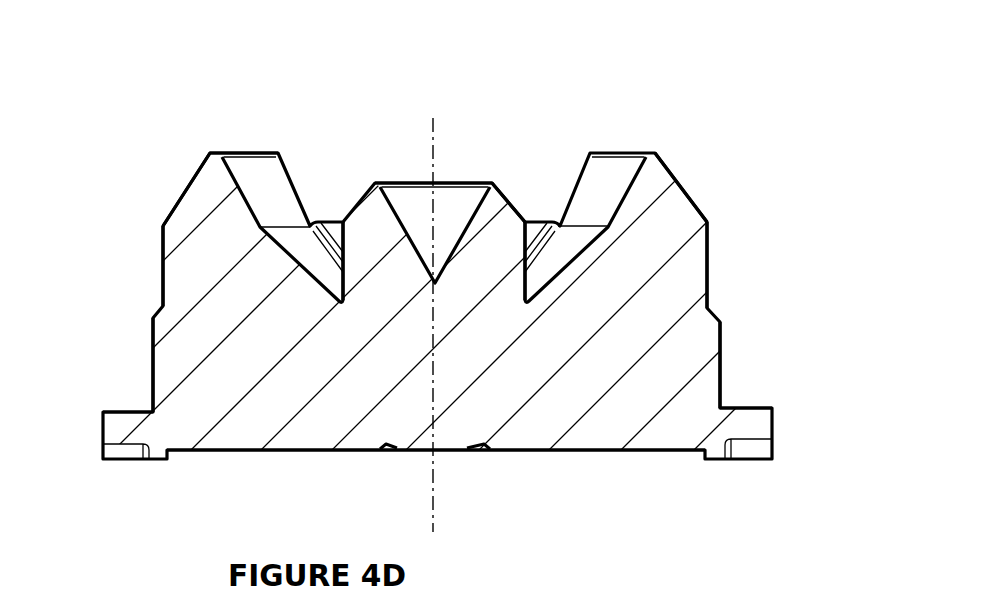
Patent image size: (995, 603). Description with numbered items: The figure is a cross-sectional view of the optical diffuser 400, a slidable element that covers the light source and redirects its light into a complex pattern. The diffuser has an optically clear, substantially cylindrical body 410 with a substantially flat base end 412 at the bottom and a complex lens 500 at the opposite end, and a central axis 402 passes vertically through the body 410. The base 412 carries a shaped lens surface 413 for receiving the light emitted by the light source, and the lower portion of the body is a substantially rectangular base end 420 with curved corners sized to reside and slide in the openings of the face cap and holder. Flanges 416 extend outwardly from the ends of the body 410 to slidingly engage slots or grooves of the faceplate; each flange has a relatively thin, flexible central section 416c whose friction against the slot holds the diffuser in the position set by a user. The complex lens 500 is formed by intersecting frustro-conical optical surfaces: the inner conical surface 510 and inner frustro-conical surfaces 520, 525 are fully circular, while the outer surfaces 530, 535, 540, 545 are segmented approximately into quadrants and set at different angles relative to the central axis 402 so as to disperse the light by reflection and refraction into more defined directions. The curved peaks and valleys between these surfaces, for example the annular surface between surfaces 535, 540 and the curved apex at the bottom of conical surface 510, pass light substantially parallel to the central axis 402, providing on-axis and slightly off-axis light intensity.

The optical diffuser 400 is at (478, 504).
The central axis 402 is at (430, 481).
The body 410 is at (317, 393).
The base end 412 is at (265, 452).
The shaped lens surface 413 is at (477, 445).
The flanges 416 is at (100, 447).
The central section 416c is at (105, 412).
The base end 420 is at (153, 350).
The complex lens 500 is at (546, 87).
The conical surface 510 is at (413, 200).
The inner frustro-conical surface 520 is at (503, 198).
The inner frustro-conical surface 525 is at (347, 265).
The segmented frustro-conical surface 530 is at (303, 248).
The frustro-conical surface 535 is at (274, 181).
The frustro-conical surface 540 is at (192, 180).
The segmented frustro-conical surface 545 is at (163, 262).